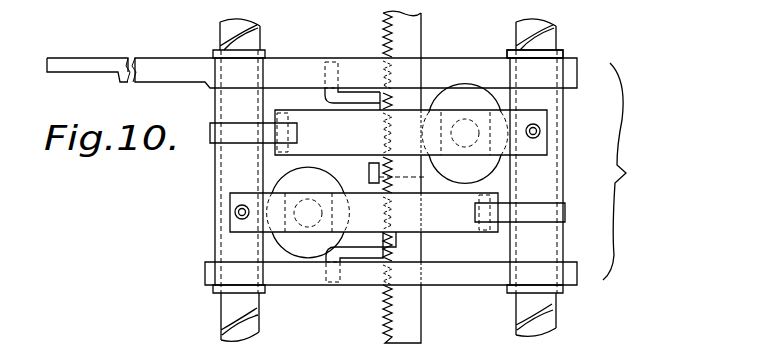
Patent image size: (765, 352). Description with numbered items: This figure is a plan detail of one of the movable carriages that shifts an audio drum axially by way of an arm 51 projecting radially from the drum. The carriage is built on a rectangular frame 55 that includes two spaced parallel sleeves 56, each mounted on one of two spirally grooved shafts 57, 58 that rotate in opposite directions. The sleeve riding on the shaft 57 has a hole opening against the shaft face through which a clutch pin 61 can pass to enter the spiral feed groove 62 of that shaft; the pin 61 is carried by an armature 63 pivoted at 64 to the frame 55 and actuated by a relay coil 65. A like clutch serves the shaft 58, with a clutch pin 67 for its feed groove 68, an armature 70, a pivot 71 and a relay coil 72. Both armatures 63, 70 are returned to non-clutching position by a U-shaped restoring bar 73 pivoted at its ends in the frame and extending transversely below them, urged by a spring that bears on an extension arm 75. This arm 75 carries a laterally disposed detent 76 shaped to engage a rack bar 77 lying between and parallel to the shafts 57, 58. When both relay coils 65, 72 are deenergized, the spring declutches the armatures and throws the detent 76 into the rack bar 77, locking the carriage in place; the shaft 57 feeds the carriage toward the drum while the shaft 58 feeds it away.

The arm 51 is at (168, 67).
The rectangular frame 55 is at (628, 171).
The sleeve 56 is at (543, 182).
The spirally grooved shaft 57 is at (251, 33).
The spirally grooved shaft 58 is at (537, 17).
The clutch pin 61 is at (234, 212).
The spiral feed groove 62 is at (262, 310).
The armature 63 is at (364, 212).
The pivot 64 is at (488, 231).
The relay coil 65 is at (306, 188).
The clutch pin 67 is at (541, 131).
The feed groove 68 is at (540, 48).
The armature 70 is at (411, 132).
The pivot 71 is at (284, 113).
The relay coil 72 is at (462, 102).
The U-shaped restoring bar 73 is at (355, 101).
The extension arm 75 is at (369, 177).
The detent 76 is at (427, 177).
The rack bar 77 is at (410, 312).